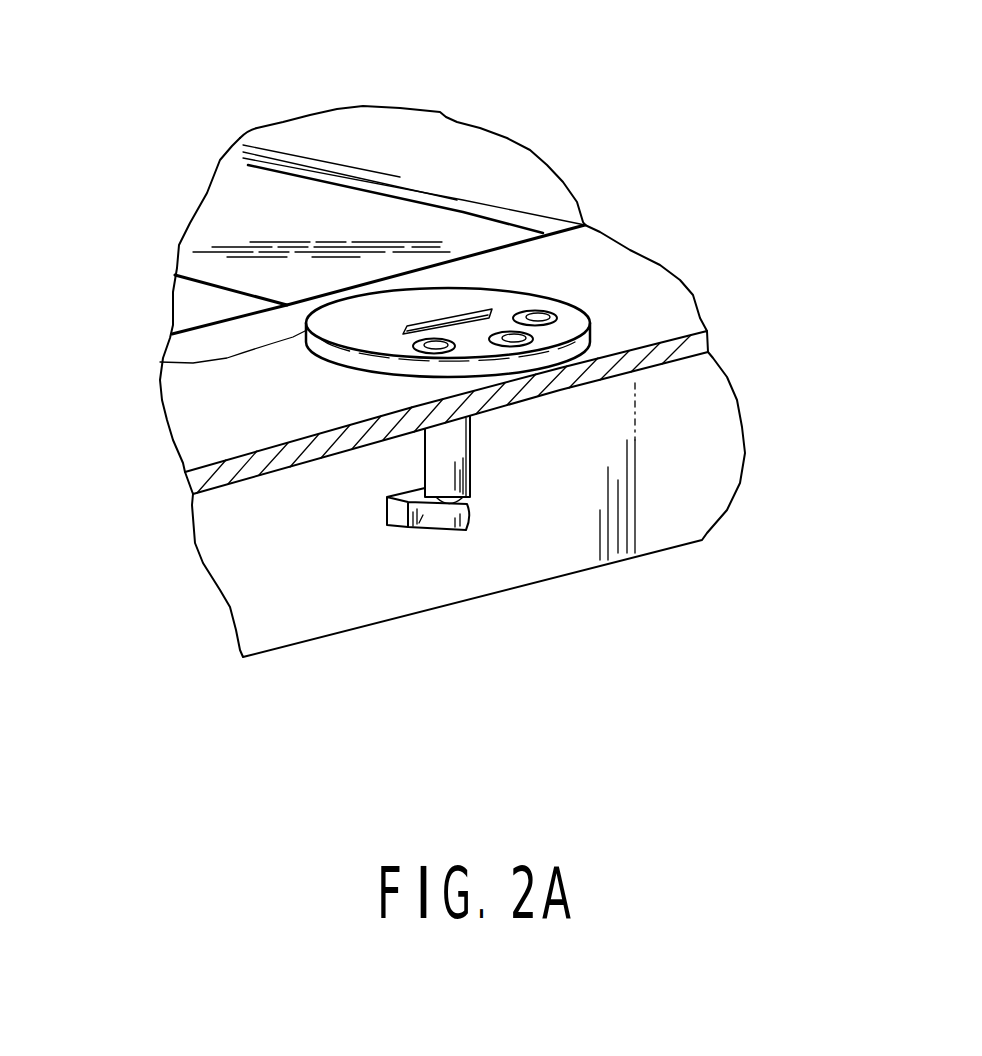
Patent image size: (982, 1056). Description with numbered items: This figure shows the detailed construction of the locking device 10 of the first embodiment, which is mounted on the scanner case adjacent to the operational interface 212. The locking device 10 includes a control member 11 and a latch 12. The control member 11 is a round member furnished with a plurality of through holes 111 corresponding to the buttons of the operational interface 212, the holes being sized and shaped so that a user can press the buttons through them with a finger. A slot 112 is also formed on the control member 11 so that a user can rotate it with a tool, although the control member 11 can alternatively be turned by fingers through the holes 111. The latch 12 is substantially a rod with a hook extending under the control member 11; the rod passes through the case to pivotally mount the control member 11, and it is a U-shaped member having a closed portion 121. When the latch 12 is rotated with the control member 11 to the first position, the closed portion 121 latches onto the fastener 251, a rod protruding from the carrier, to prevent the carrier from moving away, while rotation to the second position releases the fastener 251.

The locking device 10 is at (409, 192).
The control member 11 is at (163, 358).
The latch 12 is at (602, 549).
The through holes 111 is at (583, 314).
The slot 112 is at (450, 322).
The closed portion 121 is at (450, 457).
The operational interface 212 is at (538, 312).
The fastener 251 is at (423, 517).